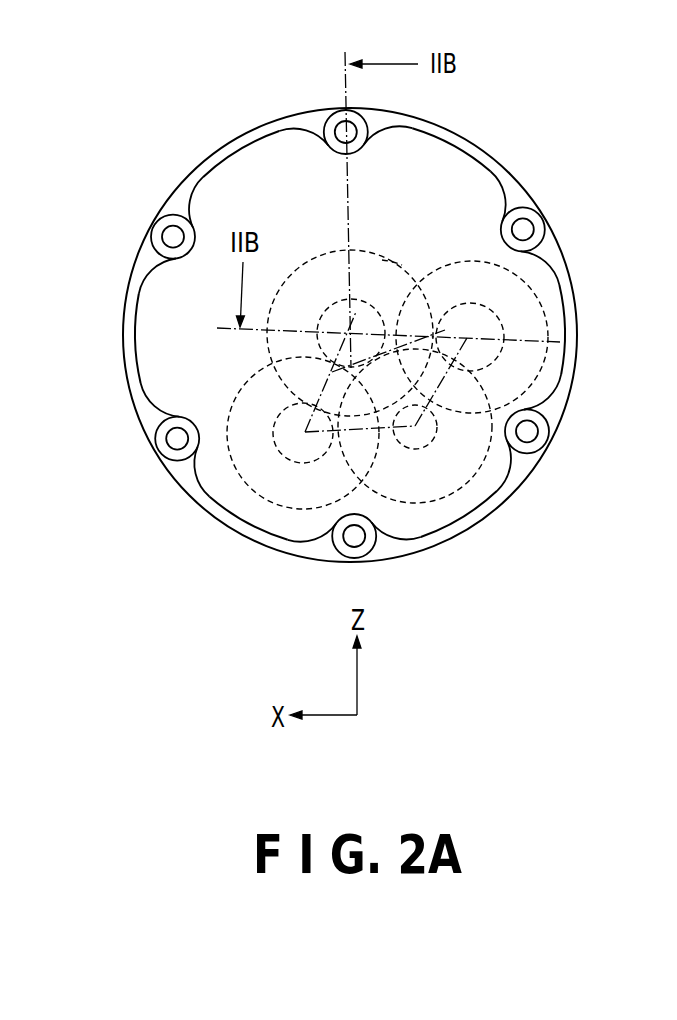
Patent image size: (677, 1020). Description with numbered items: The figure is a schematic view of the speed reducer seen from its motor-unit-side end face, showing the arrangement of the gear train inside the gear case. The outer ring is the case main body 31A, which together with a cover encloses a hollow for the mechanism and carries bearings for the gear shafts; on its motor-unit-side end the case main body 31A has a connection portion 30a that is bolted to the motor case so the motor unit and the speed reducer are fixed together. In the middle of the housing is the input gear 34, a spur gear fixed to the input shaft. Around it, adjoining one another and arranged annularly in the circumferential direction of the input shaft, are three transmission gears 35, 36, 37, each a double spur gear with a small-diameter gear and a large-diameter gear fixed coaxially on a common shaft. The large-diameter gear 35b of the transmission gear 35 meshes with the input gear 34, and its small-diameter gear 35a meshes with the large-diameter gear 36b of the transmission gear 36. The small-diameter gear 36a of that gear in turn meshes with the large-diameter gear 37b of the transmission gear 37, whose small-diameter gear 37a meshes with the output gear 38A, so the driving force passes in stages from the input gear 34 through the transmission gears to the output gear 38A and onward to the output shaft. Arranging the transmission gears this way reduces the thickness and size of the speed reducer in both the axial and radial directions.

The connection portion 30a is at (445, 128).
The case main body 31A is at (511, 145).
The input gear 34 is at (318, 256).
The output gear 38A is at (392, 258).
The transmission gear 35 is at (266, 477).
The small-diameter gear 35a is at (282, 454).
The large-diameter gear 35b is at (238, 395).
The transmission gear 36 is at (469, 482).
The small-diameter gear 36a is at (433, 441).
The large-diameter gear 36b is at (423, 503).
The transmission gear 37 is at (528, 301).
The small-diameter gear 37a is at (504, 340).
The large-diameter gear 37b is at (548, 306).